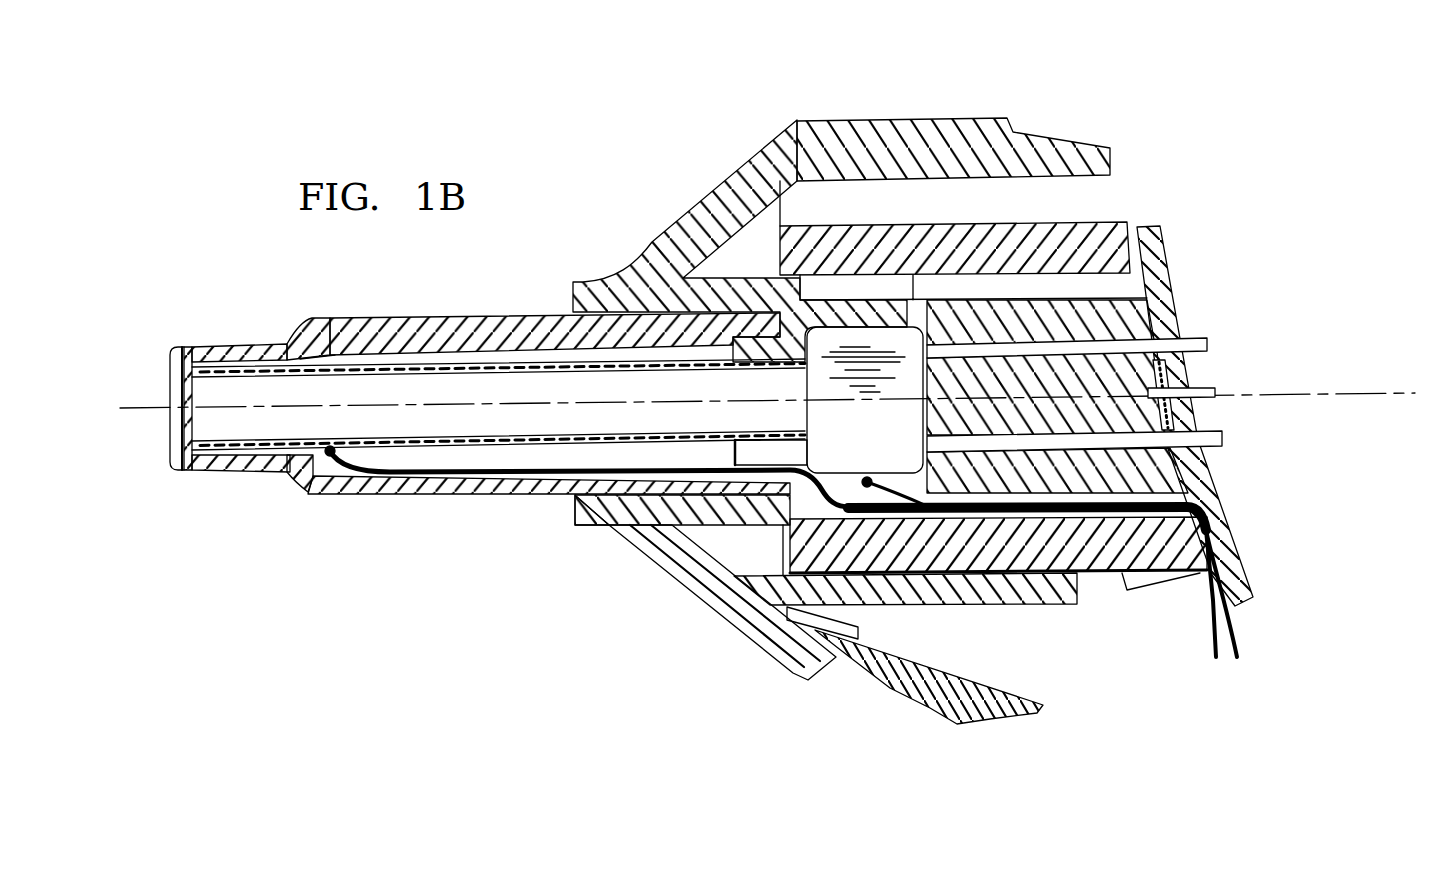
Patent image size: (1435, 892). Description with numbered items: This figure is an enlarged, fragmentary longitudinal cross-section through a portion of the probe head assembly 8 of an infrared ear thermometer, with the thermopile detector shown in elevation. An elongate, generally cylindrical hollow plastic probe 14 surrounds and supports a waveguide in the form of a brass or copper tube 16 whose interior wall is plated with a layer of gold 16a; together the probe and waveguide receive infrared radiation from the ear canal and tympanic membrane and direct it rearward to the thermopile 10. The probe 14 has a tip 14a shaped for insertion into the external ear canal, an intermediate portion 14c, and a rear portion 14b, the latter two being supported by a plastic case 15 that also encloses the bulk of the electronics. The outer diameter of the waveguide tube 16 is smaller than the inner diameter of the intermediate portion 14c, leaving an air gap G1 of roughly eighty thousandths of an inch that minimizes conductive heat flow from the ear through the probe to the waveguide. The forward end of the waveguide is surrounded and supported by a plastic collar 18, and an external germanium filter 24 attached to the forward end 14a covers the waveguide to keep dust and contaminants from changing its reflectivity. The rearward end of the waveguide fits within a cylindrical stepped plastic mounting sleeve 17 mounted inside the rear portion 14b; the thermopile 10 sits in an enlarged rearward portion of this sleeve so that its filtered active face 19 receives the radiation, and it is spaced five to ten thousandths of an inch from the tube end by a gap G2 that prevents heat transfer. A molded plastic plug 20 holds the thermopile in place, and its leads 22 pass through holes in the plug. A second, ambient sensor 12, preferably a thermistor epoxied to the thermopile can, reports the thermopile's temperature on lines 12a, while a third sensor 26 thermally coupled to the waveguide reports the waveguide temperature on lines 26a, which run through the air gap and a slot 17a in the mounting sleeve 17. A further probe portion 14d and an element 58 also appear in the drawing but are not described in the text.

The probe head assembly 8 is at (642, 105).
The thermopile 10 is at (841, 465).
The second sensor 12 is at (727, 619).
The lines 12a is at (855, 495).
The probe 14 is at (413, 318).
The tip 14a is at (208, 474).
The rear portion 14b is at (1047, 573).
The intermediate portion 14c is at (582, 525).
The tube step 14d is at (347, 494).
The case 15 is at (940, 120).
The waveguide tube 16 is at (272, 347).
The layer of gold 16a is at (437, 378).
The mounting sleeve 17 is at (872, 300).
The slot 17a is at (912, 495).
The collar 18 is at (226, 344).
The active face 19 is at (700, 470).
The plug 20 is at (1120, 308).
The leads 22 is at (1197, 336).
The external filter 24 is at (170, 393).
The third sensor 26 is at (328, 465).
The lines 26a is at (443, 490).
The mounting plate 58 is at (1232, 515).
The air gap G1 is at (315, 358).
The gap G2 is at (748, 478).